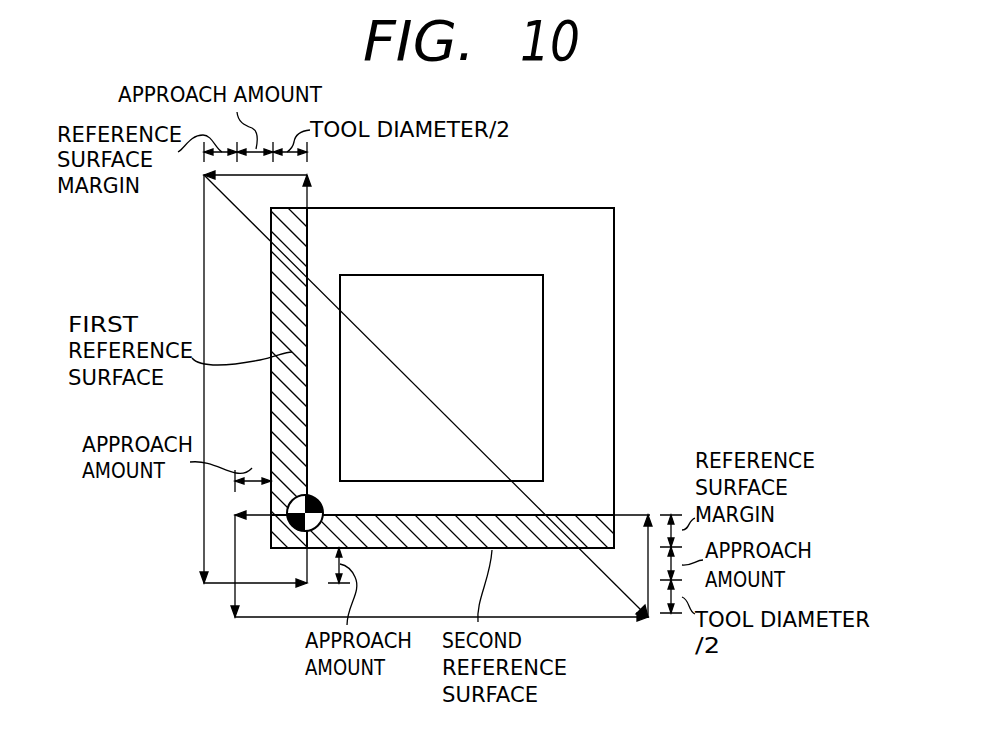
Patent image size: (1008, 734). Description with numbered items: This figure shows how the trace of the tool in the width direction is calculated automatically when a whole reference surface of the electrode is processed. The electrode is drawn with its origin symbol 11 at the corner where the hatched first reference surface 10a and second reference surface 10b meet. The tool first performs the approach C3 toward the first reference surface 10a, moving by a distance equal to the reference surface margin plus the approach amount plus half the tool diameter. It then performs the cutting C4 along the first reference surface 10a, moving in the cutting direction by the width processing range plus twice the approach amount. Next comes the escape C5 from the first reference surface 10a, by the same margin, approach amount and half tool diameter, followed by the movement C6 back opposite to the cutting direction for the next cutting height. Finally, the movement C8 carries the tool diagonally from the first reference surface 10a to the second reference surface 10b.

The approach to the reference surface C3 is at (268, 584).
The cutting of the reference surface C4 is at (308, 246).
The escape from the reference surface C5 is at (288, 175).
The movement to the next cutting height C6 is at (203, 282).
The movement from the first reference surface to the second reference surface C8 is at (413, 380).
The first reference surface 10a is at (271, 291).
The second reference surface 10b is at (556, 548).
The origin symbol 11 is at (325, 503).